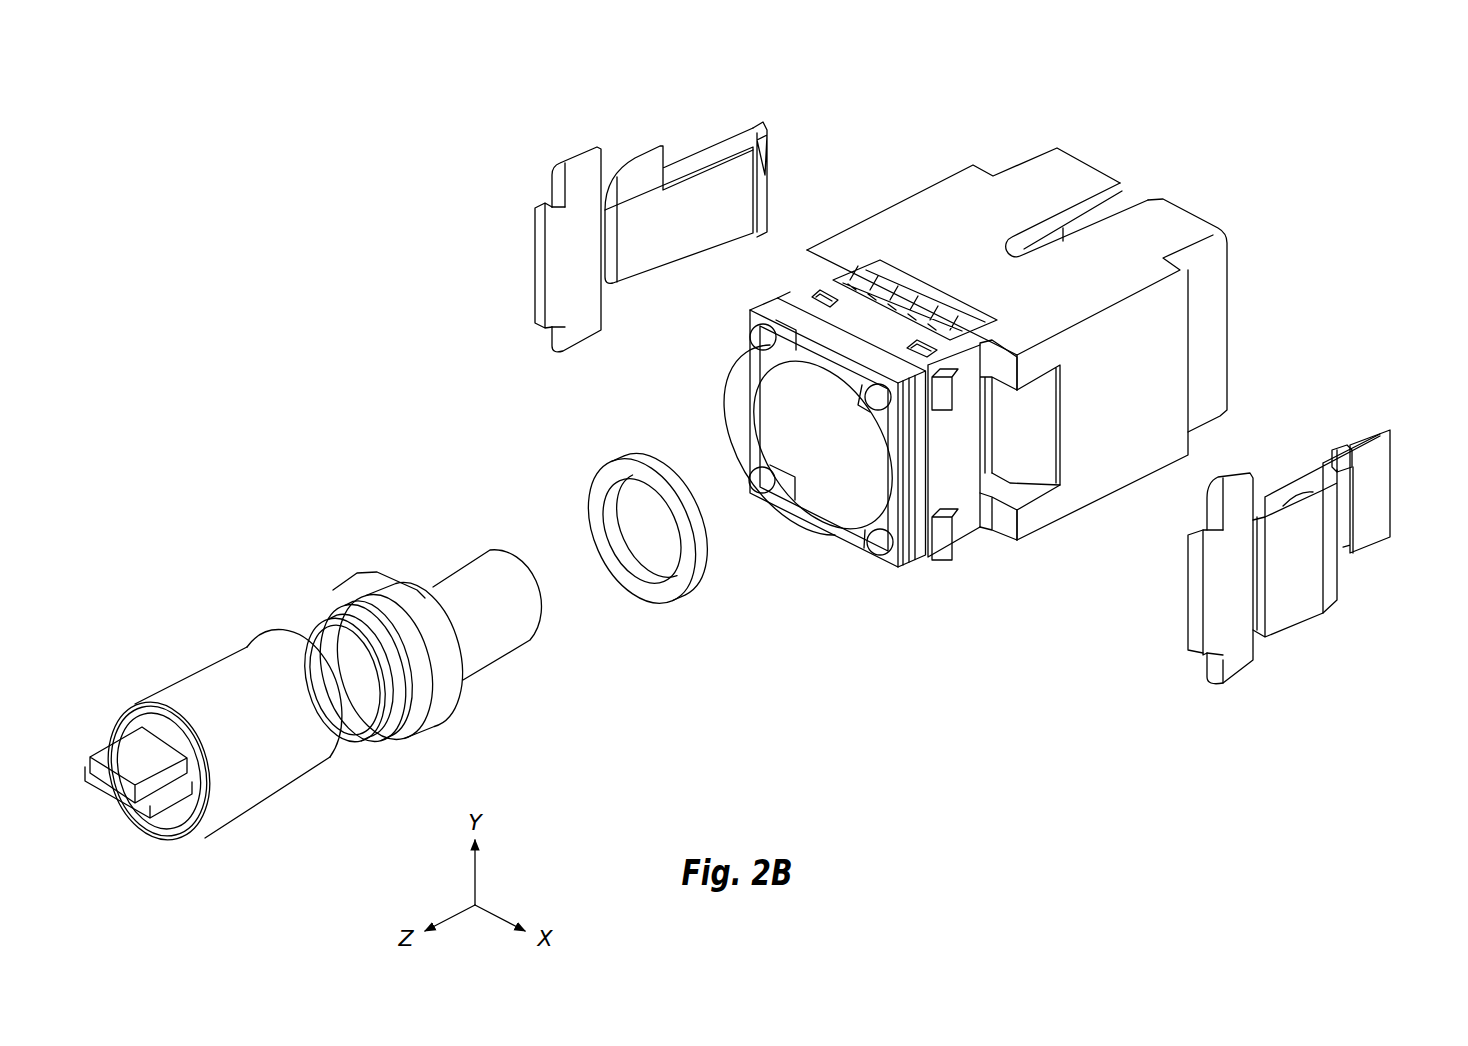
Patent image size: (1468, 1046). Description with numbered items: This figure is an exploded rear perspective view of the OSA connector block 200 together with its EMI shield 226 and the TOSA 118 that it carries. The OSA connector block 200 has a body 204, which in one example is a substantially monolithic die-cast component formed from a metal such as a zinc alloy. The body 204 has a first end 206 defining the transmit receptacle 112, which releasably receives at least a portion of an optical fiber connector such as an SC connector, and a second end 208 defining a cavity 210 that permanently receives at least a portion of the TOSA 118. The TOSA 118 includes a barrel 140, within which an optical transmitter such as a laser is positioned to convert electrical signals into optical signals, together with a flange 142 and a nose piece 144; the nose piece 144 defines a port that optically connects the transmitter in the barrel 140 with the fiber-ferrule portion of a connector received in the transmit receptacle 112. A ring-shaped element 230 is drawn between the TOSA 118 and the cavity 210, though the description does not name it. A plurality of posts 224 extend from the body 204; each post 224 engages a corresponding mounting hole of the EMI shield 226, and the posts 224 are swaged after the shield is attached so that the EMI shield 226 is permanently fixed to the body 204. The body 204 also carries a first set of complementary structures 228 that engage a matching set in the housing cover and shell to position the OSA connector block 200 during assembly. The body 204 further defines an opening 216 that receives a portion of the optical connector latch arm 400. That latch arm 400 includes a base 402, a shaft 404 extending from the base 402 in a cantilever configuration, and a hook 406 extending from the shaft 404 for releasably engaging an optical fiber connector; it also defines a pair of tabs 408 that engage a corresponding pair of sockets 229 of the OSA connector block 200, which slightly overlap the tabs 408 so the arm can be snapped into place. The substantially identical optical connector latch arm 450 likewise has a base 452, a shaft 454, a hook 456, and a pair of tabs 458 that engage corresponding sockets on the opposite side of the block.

The transmit receptacle 112 is at (1006, 358).
The TOSA 118 is at (307, 683).
The barrel 140 is at (195, 698).
The flange 142 is at (455, 706).
The nose piece 144 is at (455, 583).
The OSA connector block 200 is at (1006, 358).
The body 204 is at (915, 283).
The first end 206 is at (1053, 150).
The second end 208 is at (772, 291).
The cavity 210 is at (786, 407).
The opening 216 is at (1037, 430).
The posts 224 is at (880, 392).
The EMI shield 226 is at (905, 580).
The first set of complementary structures 228 is at (812, 297).
The sockets 229 is at (967, 376).
The O-ring 230 is at (628, 463).
The optical connector latch arm 400 is at (1282, 525).
The base 402 is at (1222, 607).
The shaft 404 is at (1290, 490).
The hook 406 is at (1332, 452).
The tabs 408 is at (1237, 507).
The optical connector latch arm 450 is at (644, 218).
The base 452 is at (567, 270).
The shaft 454 is at (706, 190).
The hook 456 is at (762, 150).
The tabs 458 is at (572, 157).